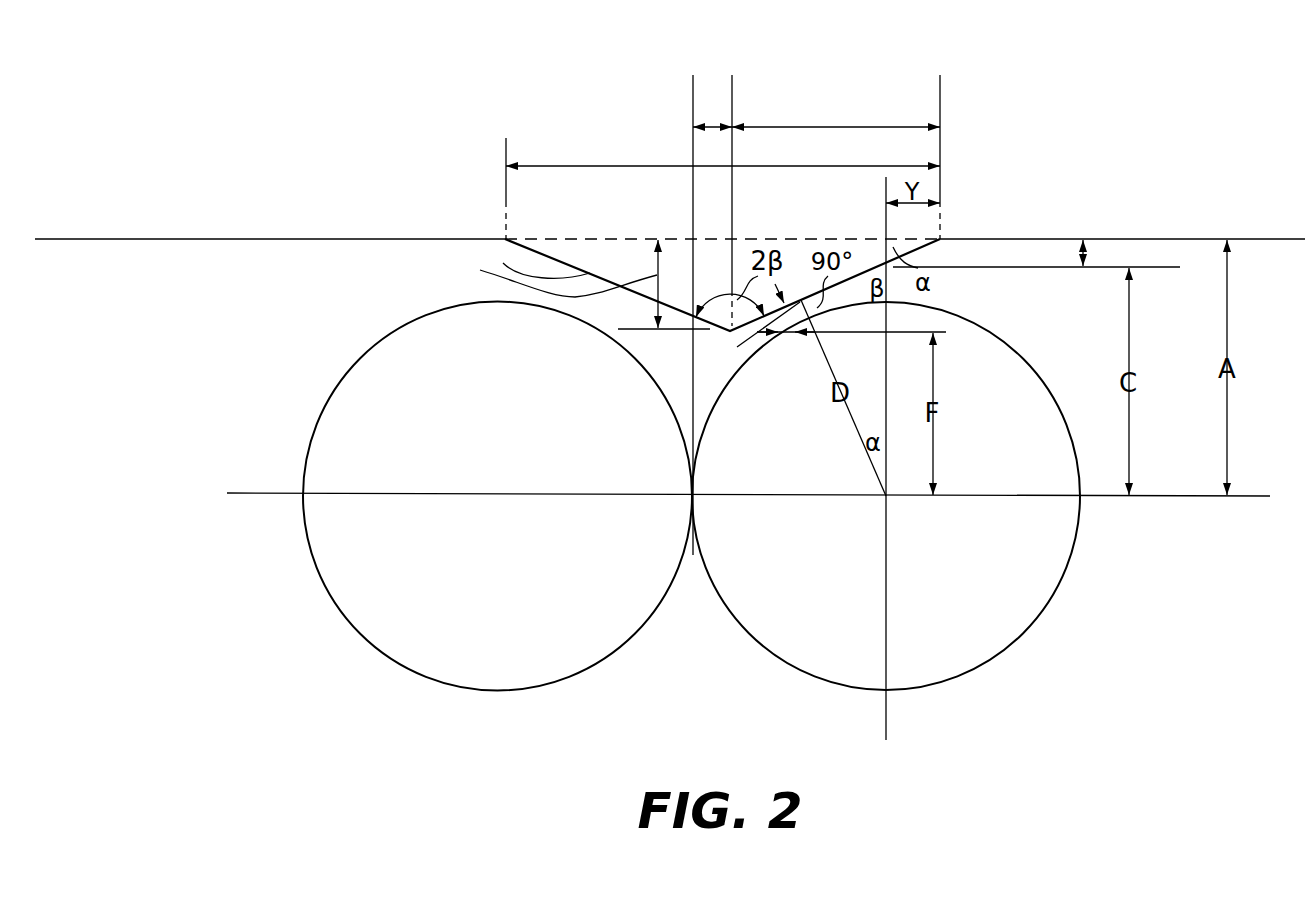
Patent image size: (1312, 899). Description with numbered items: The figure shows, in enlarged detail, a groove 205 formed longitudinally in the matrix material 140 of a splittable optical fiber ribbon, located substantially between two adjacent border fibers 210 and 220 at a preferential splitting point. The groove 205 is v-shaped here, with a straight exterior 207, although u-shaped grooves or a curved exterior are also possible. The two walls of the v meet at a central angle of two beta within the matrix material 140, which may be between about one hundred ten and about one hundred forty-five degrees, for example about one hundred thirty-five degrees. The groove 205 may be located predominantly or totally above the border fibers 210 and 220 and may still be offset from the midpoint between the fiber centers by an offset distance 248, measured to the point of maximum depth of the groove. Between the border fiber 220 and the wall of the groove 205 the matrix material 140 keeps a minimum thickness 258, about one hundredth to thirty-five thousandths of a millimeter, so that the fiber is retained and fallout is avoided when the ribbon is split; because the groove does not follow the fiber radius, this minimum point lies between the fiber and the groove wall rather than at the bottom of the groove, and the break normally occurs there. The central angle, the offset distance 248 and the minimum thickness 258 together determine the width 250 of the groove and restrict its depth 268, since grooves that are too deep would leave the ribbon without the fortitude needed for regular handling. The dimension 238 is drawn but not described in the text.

The matrix material 140 is at (320, 292).
The groove 205 is at (613, 267).
The straight exterior 207 is at (503, 263).
The border fiber 210 is at (378, 620).
The border fiber 220 is at (983, 645).
The die width dimension 238 is at (845, 127).
The offset distance 248 is at (708, 127).
The width of the groove 250 is at (647, 166).
The minimum thickness 258 is at (781, 318).
The depth of the groove 268 is at (480, 270).